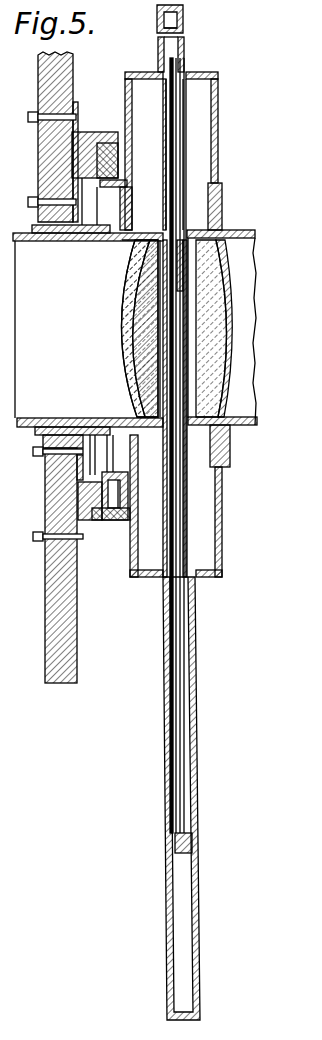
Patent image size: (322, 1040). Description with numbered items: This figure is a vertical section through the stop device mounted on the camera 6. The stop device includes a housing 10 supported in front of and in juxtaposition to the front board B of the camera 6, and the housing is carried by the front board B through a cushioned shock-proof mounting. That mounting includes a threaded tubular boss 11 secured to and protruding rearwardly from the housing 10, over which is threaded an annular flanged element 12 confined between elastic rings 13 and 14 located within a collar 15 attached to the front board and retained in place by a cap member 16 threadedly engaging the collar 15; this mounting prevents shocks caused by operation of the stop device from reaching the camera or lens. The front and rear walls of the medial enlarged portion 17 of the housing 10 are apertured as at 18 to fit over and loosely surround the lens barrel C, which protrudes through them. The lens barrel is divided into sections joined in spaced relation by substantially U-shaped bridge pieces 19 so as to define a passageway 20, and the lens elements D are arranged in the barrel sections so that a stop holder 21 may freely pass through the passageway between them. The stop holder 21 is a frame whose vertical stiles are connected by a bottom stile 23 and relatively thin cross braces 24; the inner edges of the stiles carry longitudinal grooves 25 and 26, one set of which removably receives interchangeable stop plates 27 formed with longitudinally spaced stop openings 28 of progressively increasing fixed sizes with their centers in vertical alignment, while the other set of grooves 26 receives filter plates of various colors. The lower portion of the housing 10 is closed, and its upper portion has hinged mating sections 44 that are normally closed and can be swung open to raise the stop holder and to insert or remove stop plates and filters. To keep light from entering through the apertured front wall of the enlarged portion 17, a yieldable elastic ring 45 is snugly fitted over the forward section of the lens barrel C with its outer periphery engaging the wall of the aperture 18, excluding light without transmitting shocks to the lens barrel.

The box 6 is at (3, 328).
The housing 10 is at (197, 578).
The threaded tubular boss 11 is at (118, 186).
The annular flanged element 12 is at (96, 522).
The elastic ring 13 is at (80, 494).
The elastic ring 14 is at (116, 494).
The collar 15 is at (95, 131).
The cap member 16 is at (119, 524).
The medial enlarged portion 17 is at (218, 91).
The aperture 18 is at (218, 182).
The U-shaped bridge piece 19 is at (132, 375).
The passageway 20 is at (187, 230).
The stop holder 21 is at (183, 126).
The bottom stile 23 is at (176, 840).
The cross brace 24 is at (178, 250).
The groove 25 is at (183, 152).
The groove 26 is at (166, 108).
The stop plate 27 is at (183, 656).
The stop opening 28 is at (178, 183).
The hinged mating section 44 is at (174, 38).
The yieldable elastic ring 45 is at (226, 452).
The front board B is at (72, 640).
The lens barrel C is at (88, 330).
The lens element D is at (226, 290).